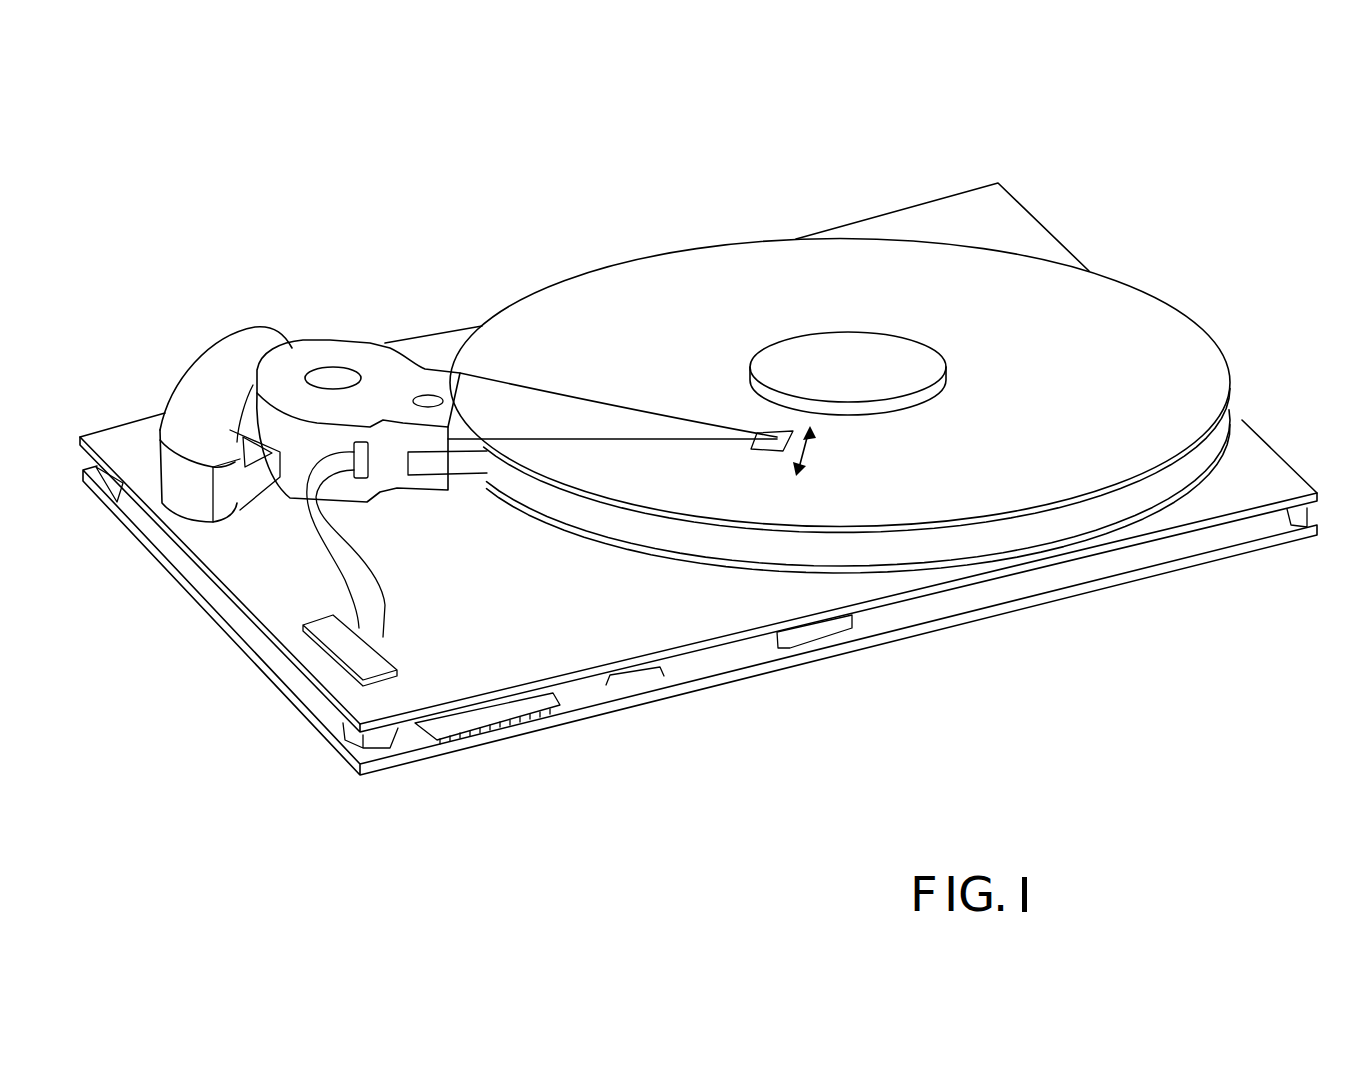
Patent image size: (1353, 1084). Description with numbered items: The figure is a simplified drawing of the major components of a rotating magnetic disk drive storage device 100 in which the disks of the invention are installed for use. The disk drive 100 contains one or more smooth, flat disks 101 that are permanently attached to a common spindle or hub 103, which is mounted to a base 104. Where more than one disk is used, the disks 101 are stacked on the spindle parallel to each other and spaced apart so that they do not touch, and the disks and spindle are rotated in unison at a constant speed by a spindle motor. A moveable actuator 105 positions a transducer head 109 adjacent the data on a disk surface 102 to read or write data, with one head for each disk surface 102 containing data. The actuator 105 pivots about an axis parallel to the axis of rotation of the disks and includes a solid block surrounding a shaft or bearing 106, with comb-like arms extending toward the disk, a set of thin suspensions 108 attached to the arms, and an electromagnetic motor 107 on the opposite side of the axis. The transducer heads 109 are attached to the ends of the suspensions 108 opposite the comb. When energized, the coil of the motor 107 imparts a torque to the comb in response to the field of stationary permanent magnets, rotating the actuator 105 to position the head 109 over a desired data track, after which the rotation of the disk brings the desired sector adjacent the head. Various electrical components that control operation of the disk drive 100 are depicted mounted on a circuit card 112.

The rotating magnetic disk drive storage device 100 is at (1080, 176).
The disks 101 is at (1177, 448).
The disk surface 102 is at (794, 262).
The spindle or hub 103 is at (882, 360).
The base 104 is at (1258, 443).
The actuator 105 is at (360, 348).
The shaft or bearing 106 is at (332, 378).
The electromagnetic motor 107 is at (164, 407).
The suspensions 108 is at (502, 403).
The transducer head 109 is at (781, 452).
The circuit card 112 is at (719, 687).